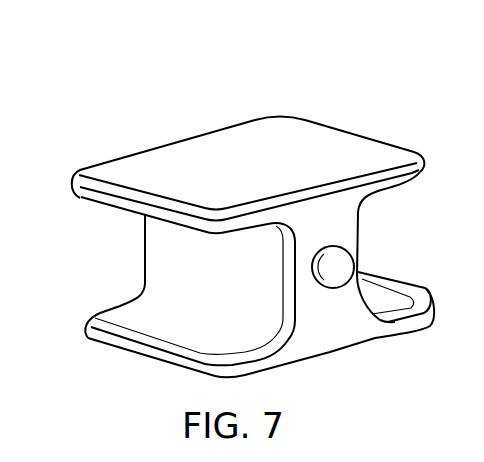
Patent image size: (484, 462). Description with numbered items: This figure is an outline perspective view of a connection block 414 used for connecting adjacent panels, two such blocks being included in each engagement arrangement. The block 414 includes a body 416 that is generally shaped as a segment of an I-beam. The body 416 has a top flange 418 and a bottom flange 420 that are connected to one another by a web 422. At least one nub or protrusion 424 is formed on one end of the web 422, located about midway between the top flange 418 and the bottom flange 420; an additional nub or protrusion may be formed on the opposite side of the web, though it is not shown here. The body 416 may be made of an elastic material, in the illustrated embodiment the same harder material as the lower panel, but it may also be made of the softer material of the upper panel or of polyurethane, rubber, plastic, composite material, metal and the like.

The block 414 is at (374, 117).
The body 416 is at (170, 257).
The top flange 418 is at (213, 128).
The bottom flange 420 is at (152, 352).
The web 422 is at (331, 224).
The nub or protrusion 424 is at (336, 272).